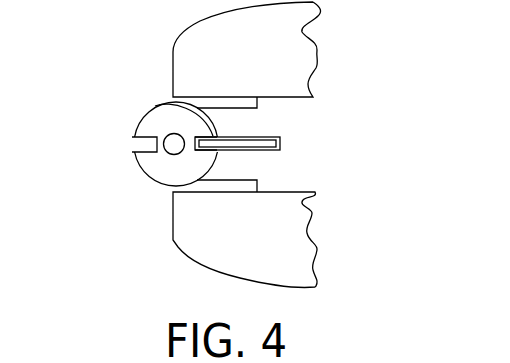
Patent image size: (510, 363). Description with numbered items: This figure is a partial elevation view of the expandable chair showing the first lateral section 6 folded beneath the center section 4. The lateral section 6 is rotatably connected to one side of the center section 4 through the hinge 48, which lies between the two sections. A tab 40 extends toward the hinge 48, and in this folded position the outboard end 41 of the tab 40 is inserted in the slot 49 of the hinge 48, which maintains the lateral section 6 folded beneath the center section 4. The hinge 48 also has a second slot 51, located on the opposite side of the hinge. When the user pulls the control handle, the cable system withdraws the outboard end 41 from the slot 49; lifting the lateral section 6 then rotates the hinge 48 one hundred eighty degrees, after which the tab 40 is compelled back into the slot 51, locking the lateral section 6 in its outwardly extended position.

The center section 4 is at (300, 33).
The first lateral section 6 is at (215, 238).
The tab 40 is at (280, 143).
The outboard end 41 is at (217, 135).
The hinge 48 is at (158, 124).
The slot 49 is at (157, 106).
The slot 51 is at (144, 143).